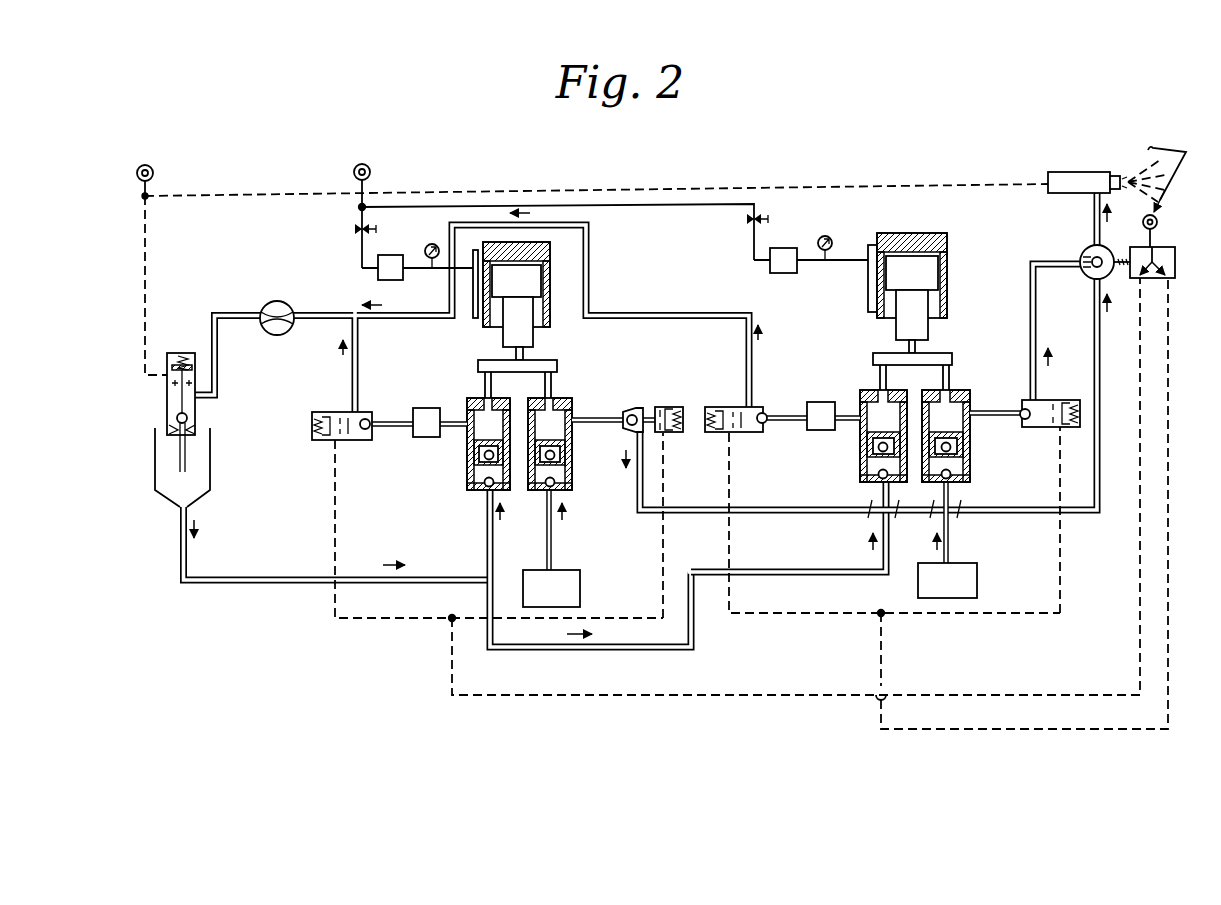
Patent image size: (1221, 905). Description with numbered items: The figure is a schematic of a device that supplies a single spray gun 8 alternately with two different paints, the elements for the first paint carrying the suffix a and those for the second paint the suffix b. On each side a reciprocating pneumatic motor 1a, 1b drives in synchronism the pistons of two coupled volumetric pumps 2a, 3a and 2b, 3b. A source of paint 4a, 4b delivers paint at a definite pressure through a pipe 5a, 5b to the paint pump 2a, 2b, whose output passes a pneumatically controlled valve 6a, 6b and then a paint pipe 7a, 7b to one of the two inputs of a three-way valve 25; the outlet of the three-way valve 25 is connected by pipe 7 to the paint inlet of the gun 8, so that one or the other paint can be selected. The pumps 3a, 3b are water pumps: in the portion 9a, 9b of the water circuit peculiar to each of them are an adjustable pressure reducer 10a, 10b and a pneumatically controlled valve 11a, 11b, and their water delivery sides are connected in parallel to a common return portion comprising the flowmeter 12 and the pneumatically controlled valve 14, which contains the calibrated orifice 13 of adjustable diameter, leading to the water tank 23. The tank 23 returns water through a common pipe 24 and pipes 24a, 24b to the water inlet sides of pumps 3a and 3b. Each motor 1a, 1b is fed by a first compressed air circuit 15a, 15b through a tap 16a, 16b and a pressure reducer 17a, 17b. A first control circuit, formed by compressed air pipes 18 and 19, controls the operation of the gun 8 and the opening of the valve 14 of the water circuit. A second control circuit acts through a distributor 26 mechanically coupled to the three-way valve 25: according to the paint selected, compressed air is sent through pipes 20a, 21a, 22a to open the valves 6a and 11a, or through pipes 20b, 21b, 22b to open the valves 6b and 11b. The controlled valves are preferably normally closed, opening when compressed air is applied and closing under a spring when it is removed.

The pneumatic motor 1a is at (550, 313).
The pneumatic motor 1b is at (948, 249).
The volumetric pump 2a is at (571, 403).
The volumetric pump 2b is at (970, 470).
The volumetric pump 3a is at (467, 477).
The volumetric pump 3b is at (860, 478).
The source of paint 4a is at (551, 588).
The source of paint 4b is at (947, 580).
The pipe 5a is at (555, 552).
The pipe 5b is at (953, 537).
The pneumatically controlled valve 6a is at (661, 406).
The pneumatically controlled valve 6b is at (1037, 428).
The pipe 7 is at (1093, 224).
The paint pipe 7a is at (1094, 367).
The paint pipe 7b is at (1031, 327).
The spray gun 8 is at (1062, 188).
The portion of water circuit 9a is at (369, 389).
The portion of water circuit 9b is at (768, 402).
The pressure reducer 10a is at (424, 408).
The pressure reducer 10b is at (818, 421).
The pneumatically controlled valve 11a is at (336, 410).
The pneumatically controlled valve 11b is at (717, 405).
The flowmeter 12 is at (273, 301).
The calibrated nozzle 13 is at (197, 424).
The pneumatically controlled valve 14 is at (165, 382).
The compressed air circuit 15a is at (358, 272).
The compressed air circuit 15b is at (752, 251).
The tap 16a is at (343, 224).
The tap 16b is at (746, 221).
The pressure reducer 17a is at (393, 273).
The pressure reducer 17b is at (785, 274).
The compressed air pipe 18 is at (678, 189).
The compressed air pipe 19 is at (146, 271).
The compressed air pipe 20a is at (620, 695).
The compressed air pipe 20b is at (1040, 728).
The compressed air pipe 21a is at (416, 624).
The compressed air pipe 21b is at (840, 612).
The compressed air pipe 22a is at (613, 612).
The compressed air pipe 22b is at (1033, 611).
The water tank 23 is at (211, 463).
The common pipe 24 is at (285, 572).
The pipe 24a is at (487, 550).
The pipe 24b is at (808, 568).
The three-way valve 25 is at (1087, 274).
The distributor 26 is at (1176, 264).